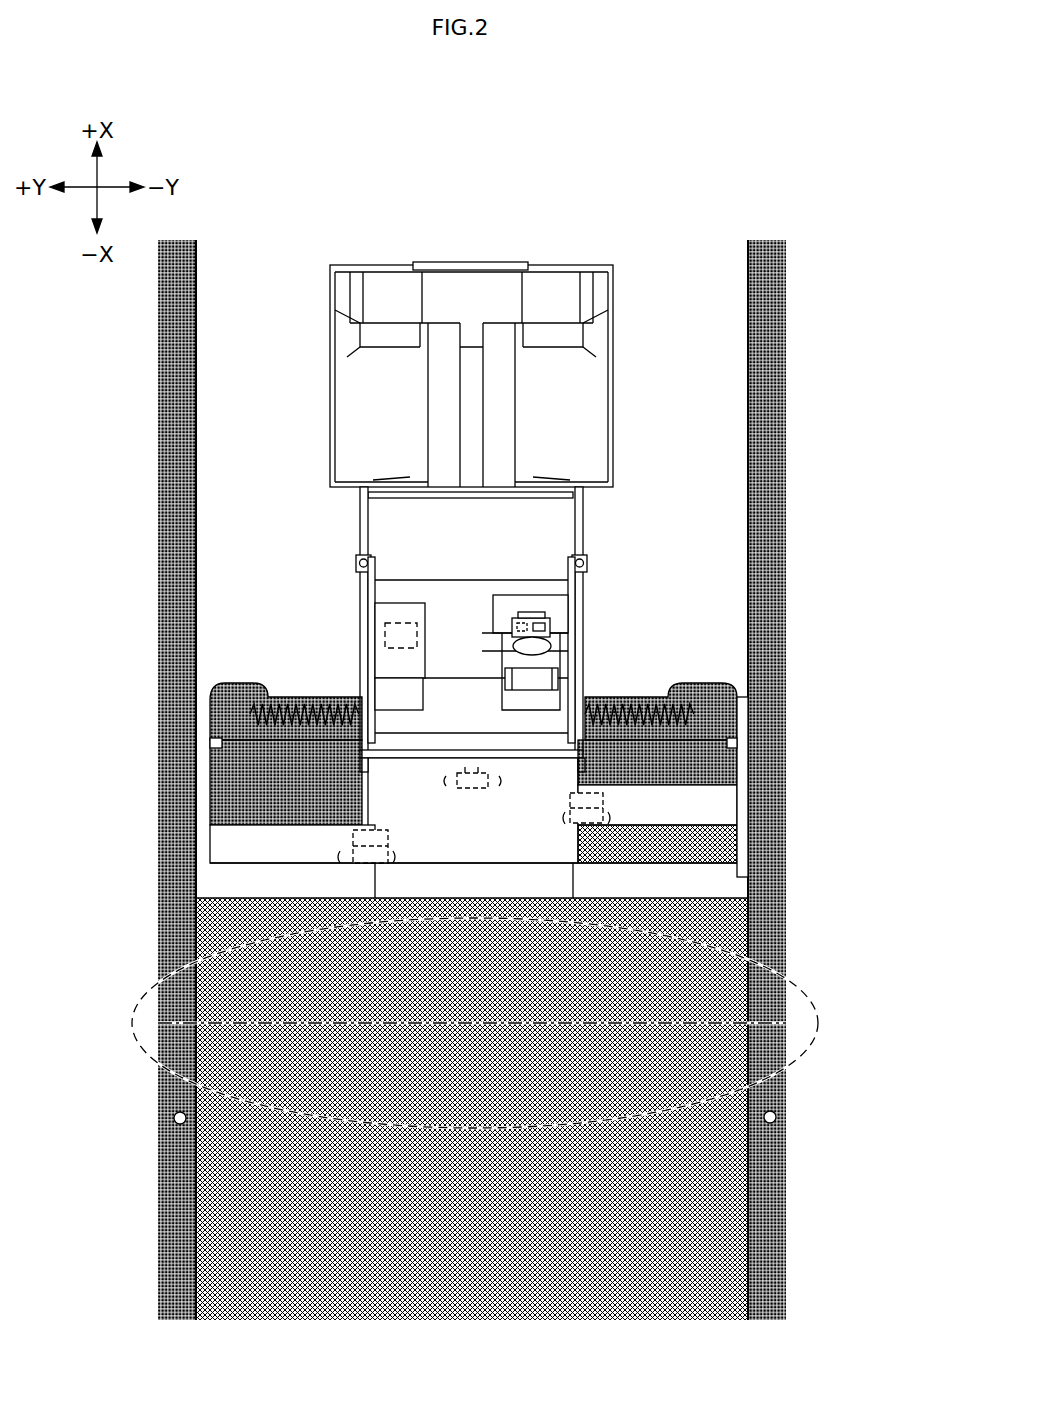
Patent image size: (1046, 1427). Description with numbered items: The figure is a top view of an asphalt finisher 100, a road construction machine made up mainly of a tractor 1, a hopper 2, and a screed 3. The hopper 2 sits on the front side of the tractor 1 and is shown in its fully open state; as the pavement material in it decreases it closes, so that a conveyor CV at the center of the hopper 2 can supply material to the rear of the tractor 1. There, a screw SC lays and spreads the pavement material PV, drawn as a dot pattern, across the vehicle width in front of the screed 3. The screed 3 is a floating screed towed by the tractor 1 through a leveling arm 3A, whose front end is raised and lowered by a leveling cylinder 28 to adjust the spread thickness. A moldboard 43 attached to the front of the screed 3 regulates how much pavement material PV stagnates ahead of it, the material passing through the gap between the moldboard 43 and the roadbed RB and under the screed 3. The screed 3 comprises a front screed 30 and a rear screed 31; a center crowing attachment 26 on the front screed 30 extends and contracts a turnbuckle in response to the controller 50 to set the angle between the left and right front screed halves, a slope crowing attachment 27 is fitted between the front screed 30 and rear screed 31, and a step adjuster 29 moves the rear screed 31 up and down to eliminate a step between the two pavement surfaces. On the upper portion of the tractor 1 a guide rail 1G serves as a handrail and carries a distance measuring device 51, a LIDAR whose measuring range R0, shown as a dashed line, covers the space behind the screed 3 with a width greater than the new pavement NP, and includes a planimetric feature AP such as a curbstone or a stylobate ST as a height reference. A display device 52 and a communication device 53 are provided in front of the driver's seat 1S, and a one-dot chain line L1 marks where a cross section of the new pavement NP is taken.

The asphalt finisher 100 is at (506, 529).
The hopper 2 is at (507, 341).
The conveyor CV is at (443, 414).
The tractor 1 is at (491, 664).
The roadbed RB is at (491, 664).
The planimetric feature AP is at (194, 488).
The leveling cylinder 28 is at (360, 555).
The leveling arm 3A is at (367, 593).
The communication device 53 is at (527, 610).
The controller 50 is at (401, 622).
The display device 52 is at (548, 618).
The guide rail 1G is at (360, 650).
The driver's seat 1S is at (540, 670).
The screw SC is at (668, 698).
The moldboard 43 is at (235, 741).
The screed 3 is at (766, 727).
The distance measuring device 51 is at (478, 748).
The center crowing attachment 26 is at (485, 770).
The pavement material PV is at (473, 683).
The front screed 30 is at (800, 757).
The rear screed 31 is at (248, 843).
The step adjuster 29 is at (352, 834).
The slope crowing attachment 27 is at (362, 866).
The new pavement NP is at (520, 1180).
The one-dot chain line L1 is at (713, 1023).
The measuring range R0 is at (820, 1008).
The stylobate ST is at (174, 1118).